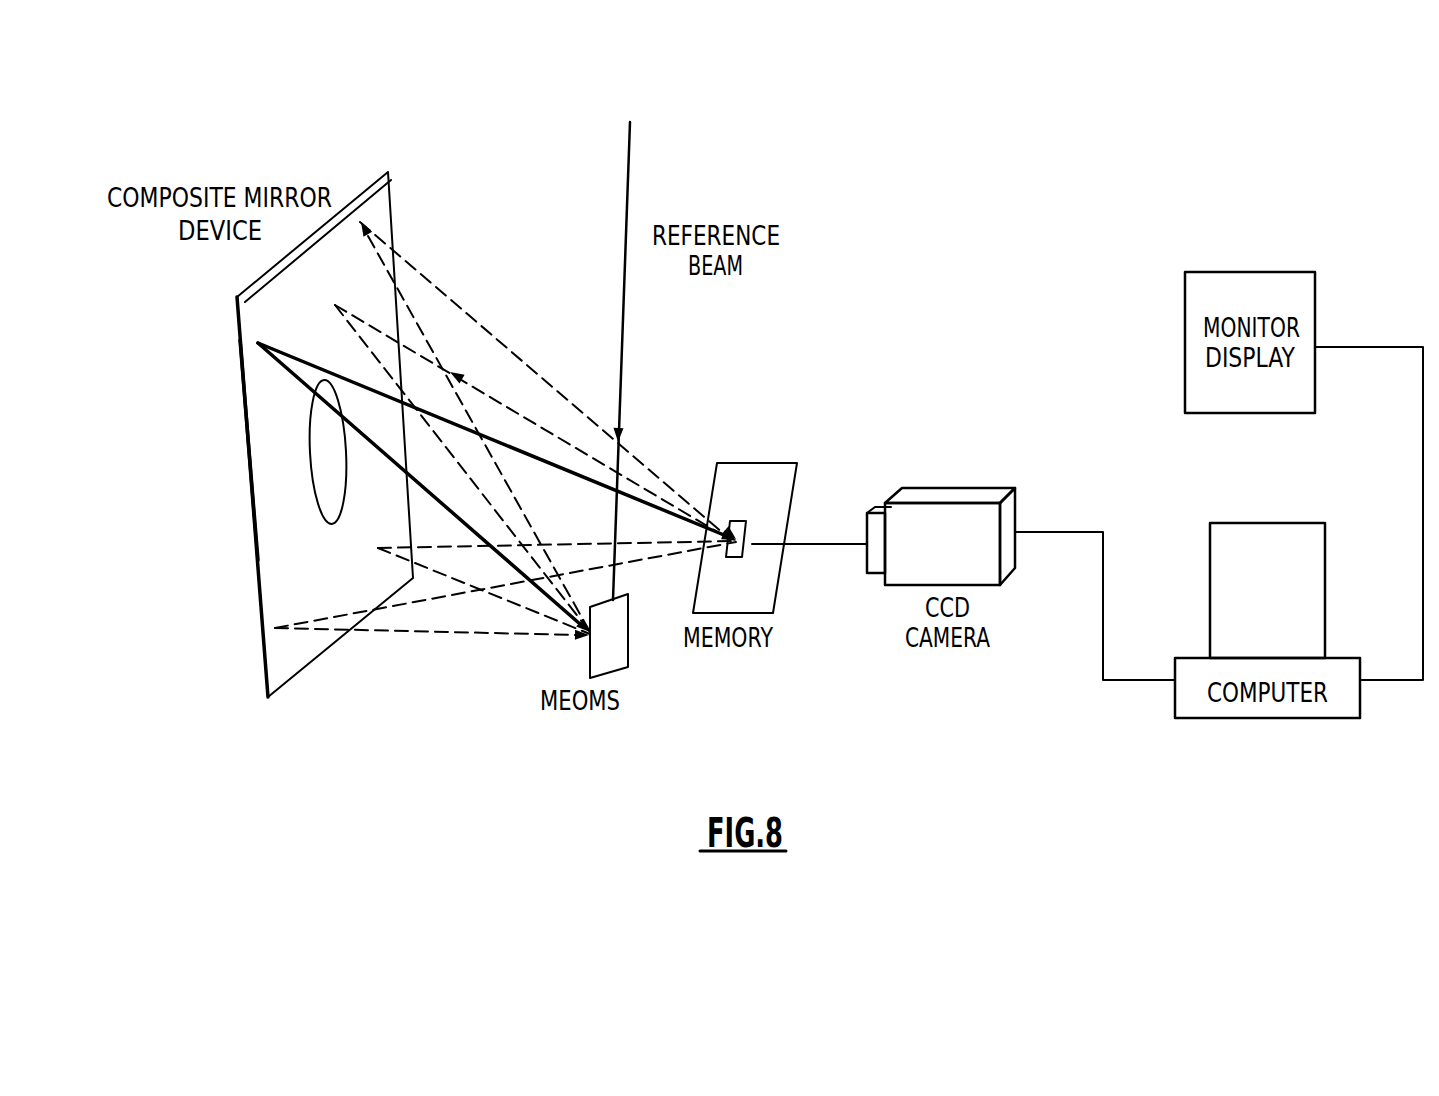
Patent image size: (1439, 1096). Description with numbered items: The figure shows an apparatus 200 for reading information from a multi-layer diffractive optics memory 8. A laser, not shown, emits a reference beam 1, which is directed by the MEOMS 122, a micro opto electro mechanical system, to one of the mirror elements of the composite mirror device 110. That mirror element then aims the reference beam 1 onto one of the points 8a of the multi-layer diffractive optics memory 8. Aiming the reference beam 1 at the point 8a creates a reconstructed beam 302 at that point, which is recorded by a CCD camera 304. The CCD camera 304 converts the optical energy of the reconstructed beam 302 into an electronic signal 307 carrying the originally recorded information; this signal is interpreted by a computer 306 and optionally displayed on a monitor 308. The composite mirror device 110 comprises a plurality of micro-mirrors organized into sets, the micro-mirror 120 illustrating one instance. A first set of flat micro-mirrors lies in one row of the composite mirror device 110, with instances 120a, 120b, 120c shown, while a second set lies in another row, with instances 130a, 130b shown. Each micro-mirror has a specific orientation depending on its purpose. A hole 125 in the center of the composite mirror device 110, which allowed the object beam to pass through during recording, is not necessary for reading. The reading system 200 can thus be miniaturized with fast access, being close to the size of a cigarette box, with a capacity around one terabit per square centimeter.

The reference beam 1 is at (630, 150).
The multi-layer diffractive optics memory 8 is at (770, 478).
The point 8a is at (742, 521).
The composite mirror device 110 is at (240, 539).
The micro-mirror 120 is at (273, 471).
The flat micro-mirror 120a is at (247, 367).
The flat micro-mirror 120b is at (340, 307).
The flat micro-mirror 120c is at (360, 220).
The MEOMS 122 is at (613, 658).
The hole 125 is at (333, 497).
The micro-mirror 130a is at (295, 626).
The micro-mirror 130b is at (378, 548).
The apparatus 200 is at (216, 722).
The reconstructed beam 302 is at (832, 545).
The CCD camera 304 is at (960, 488).
The computer 306 is at (1290, 718).
The electronic signal 307 is at (1103, 567).
The monitor 308 is at (1237, 272).